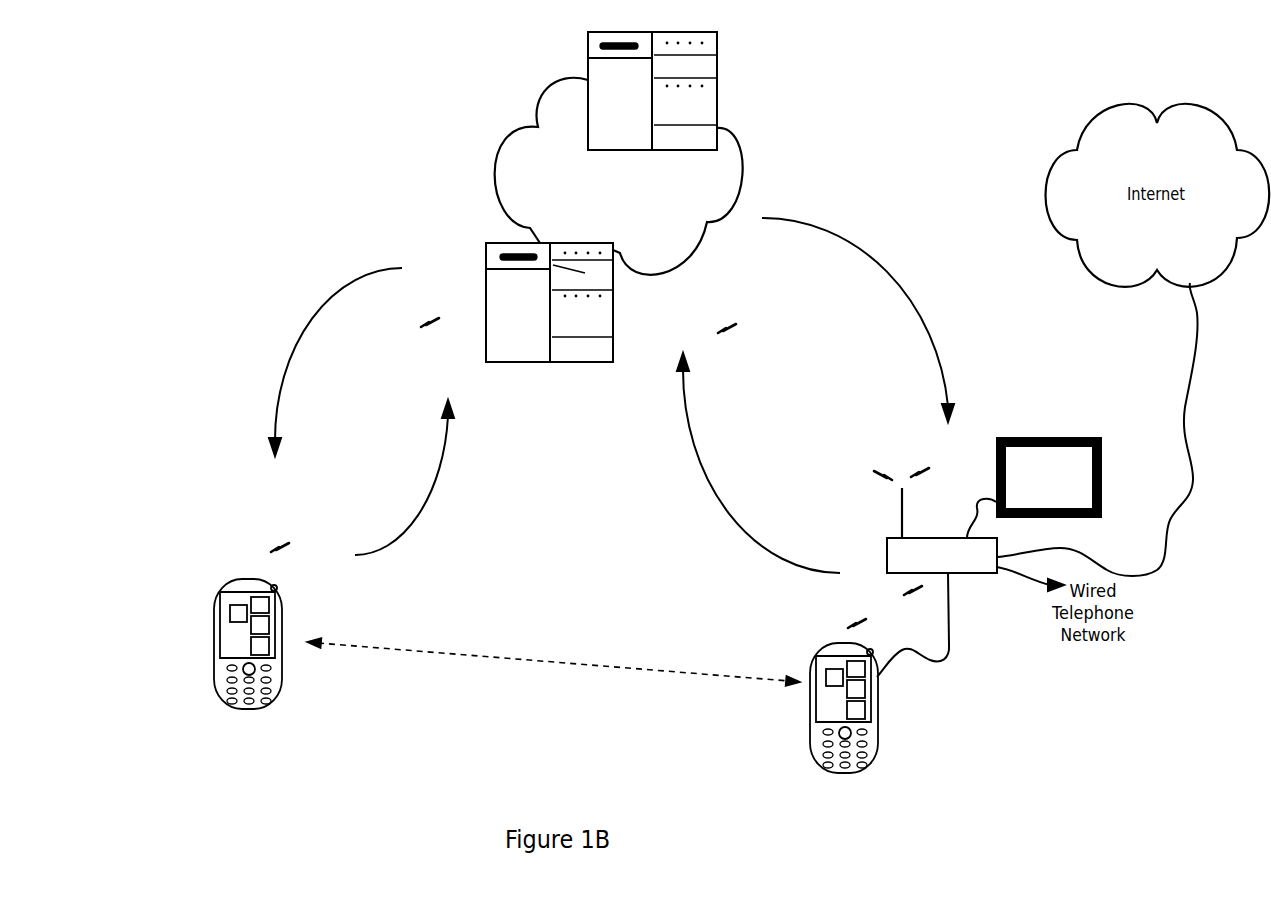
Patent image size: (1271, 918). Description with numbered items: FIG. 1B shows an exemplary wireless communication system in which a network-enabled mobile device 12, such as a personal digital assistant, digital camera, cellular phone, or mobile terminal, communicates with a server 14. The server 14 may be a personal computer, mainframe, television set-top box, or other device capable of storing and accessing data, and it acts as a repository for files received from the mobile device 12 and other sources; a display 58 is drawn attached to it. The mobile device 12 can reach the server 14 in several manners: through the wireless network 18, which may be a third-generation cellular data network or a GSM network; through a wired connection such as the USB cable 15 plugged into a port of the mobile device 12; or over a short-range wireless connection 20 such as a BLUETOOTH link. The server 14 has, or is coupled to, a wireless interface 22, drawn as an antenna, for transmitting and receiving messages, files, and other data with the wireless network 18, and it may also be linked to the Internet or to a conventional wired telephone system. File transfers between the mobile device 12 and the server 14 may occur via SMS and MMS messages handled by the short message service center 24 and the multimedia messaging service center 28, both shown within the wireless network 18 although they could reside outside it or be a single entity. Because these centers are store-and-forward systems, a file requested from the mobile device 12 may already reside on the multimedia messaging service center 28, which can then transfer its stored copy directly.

The mobile device 12 is at (215, 607).
The server 14 is at (942, 555).
The USB cable 15 is at (948, 652).
The wireless network 18 is at (745, 177).
The short-range wireless connection 20 is at (870, 616).
The wireless interface 22 is at (898, 526).
The short message service center 24 is at (549, 319).
The multimedia message service center (MMSC) 28 is at (652, 78).
The display device 58 is at (1032, 490).